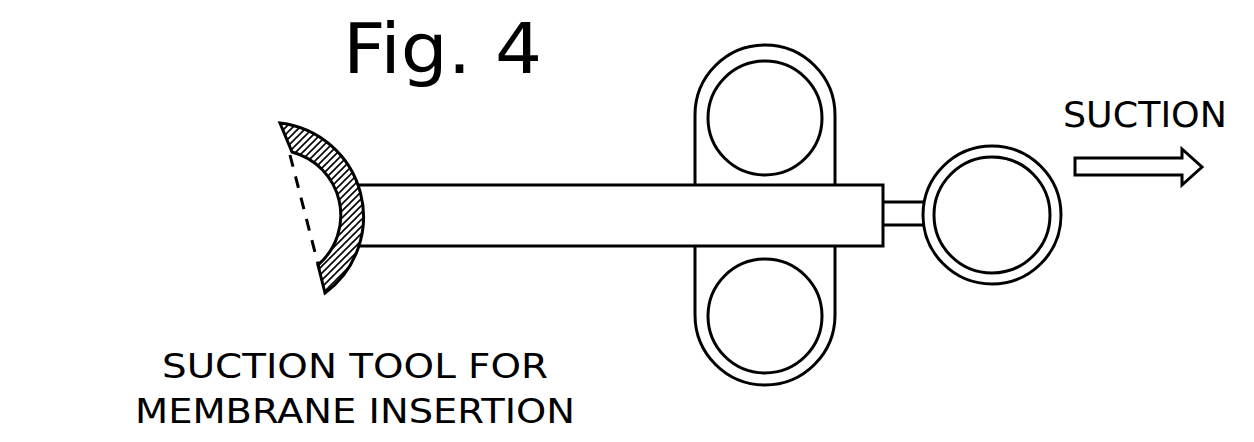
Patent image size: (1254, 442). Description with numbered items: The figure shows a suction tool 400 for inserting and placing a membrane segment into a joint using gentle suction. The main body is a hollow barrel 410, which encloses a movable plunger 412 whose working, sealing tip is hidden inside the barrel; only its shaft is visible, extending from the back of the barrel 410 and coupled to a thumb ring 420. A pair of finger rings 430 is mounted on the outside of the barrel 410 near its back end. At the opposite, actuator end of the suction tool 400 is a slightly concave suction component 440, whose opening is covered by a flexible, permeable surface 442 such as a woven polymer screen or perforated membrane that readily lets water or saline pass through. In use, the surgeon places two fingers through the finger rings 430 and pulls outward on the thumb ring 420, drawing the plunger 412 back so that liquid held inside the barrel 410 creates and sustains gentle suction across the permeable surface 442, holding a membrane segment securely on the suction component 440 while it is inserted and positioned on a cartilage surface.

The suction tool 400 is at (205, 137).
The hollow barrel 410 is at (601, 257).
The plunger 412 is at (901, 232).
The thumb ring 420 is at (1052, 263).
The finger rings 430 is at (843, 82).
The suction component 440 is at (353, 278).
The permeable surface 442 is at (290, 232).